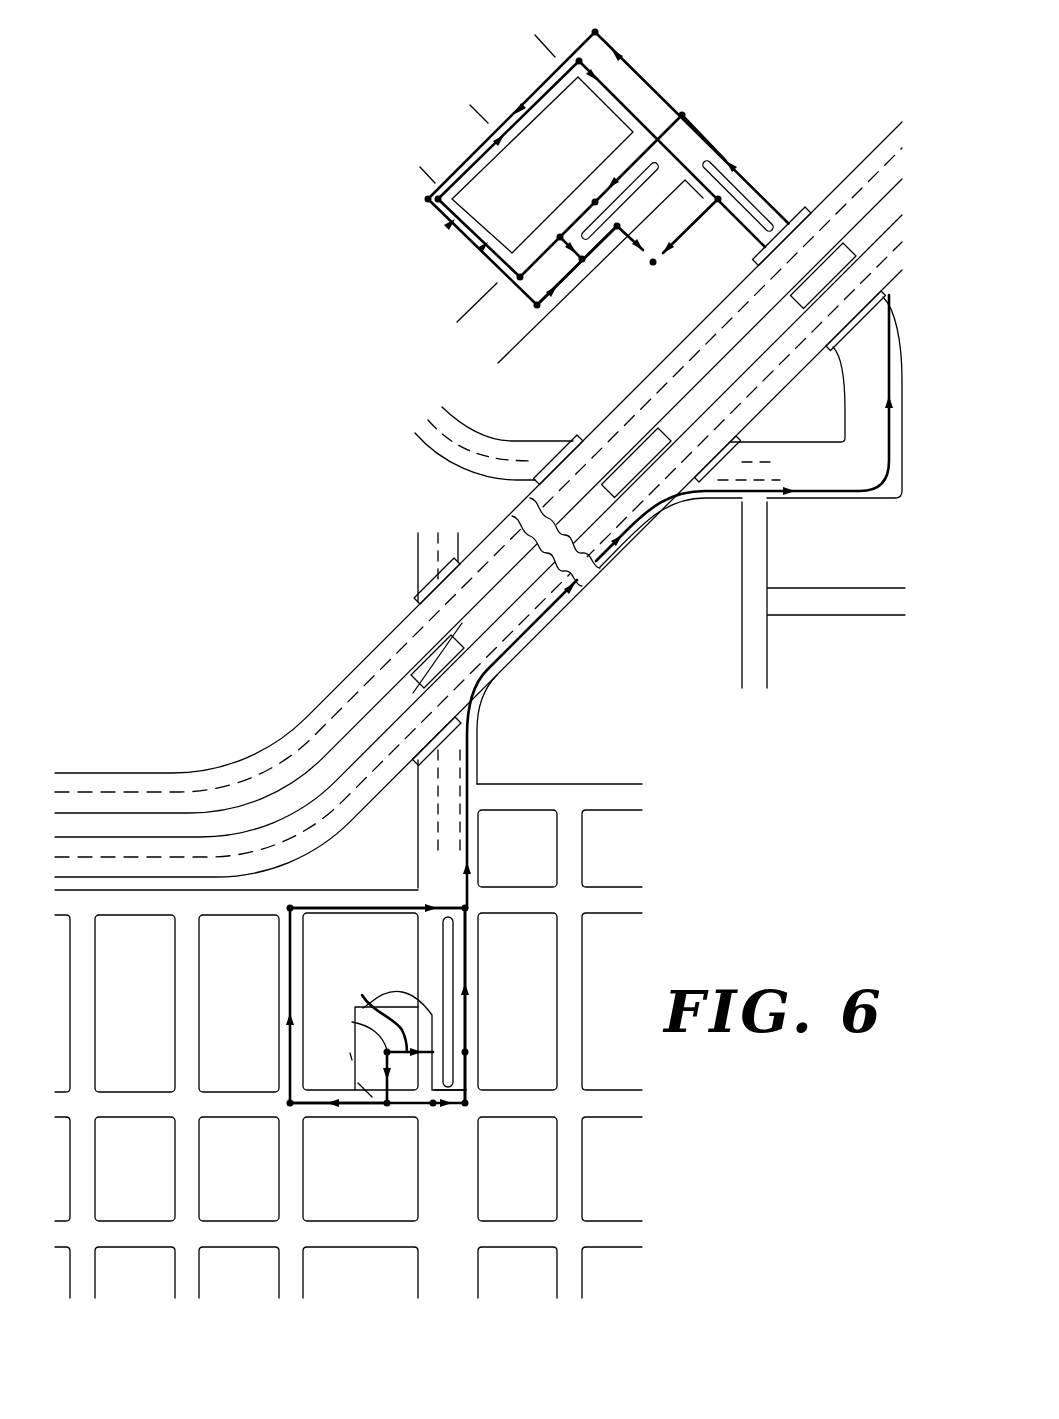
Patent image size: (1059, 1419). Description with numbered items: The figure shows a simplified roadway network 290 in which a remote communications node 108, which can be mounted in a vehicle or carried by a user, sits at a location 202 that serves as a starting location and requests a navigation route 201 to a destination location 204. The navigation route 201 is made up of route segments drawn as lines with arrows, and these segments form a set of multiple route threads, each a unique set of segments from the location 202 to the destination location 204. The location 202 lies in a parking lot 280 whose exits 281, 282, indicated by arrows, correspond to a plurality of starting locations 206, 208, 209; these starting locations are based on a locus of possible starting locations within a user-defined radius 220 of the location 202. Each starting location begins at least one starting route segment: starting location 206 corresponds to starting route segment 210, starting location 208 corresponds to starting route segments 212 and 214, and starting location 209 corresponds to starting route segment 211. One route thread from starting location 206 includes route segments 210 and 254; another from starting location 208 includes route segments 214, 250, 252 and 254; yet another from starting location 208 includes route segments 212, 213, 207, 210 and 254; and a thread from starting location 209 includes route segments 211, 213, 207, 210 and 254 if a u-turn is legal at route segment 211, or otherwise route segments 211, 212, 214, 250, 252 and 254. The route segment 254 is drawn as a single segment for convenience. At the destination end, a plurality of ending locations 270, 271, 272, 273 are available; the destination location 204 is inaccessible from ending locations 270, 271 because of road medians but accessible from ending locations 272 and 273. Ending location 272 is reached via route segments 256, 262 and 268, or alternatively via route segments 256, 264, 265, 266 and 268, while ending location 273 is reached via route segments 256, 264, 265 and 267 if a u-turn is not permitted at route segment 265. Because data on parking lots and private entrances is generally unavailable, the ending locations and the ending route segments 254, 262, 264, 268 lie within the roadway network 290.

The remote communications node 108 is at (355, 1022).
The navigation route 201 is at (716, 575).
The location 202 is at (385, 1052).
The destination location 204 is at (654, 265).
The starting location 206 is at (466, 1052).
The route segment 207 is at (466, 1068).
The starting location 208 is at (387, 1106).
The starting location 209 is at (423, 1045).
The starting route segment 210 is at (468, 962).
The starting route segment 211 is at (460, 1090).
The starting route segment 212 is at (408, 1104).
The route segment 213 is at (453, 1105).
The starting route segment 214 is at (330, 1108).
The radius 220 is at (455, 1030).
The route segment 250 is at (289, 1040).
The route segment 252 is at (383, 909).
The route segment 254 is at (770, 205).
The route segment 256 is at (703, 134).
The route segment 262 is at (621, 52).
The route segment 264 is at (636, 160).
The route segment 265 is at (575, 208).
The route segment 266 is at (570, 252).
The route segment 267 is at (592, 76).
The route segment 268 is at (600, 268).
The ending location 270 is at (731, 160).
The ending location 271 is at (602, 197).
The ending location 272 is at (618, 235).
The ending location 273 is at (718, 212).
The parking lot 280 is at (325, 983).
The exit 281 is at (370, 1011).
The exit 282 is at (384, 1082).
The roadway network 290 is at (460, 366).